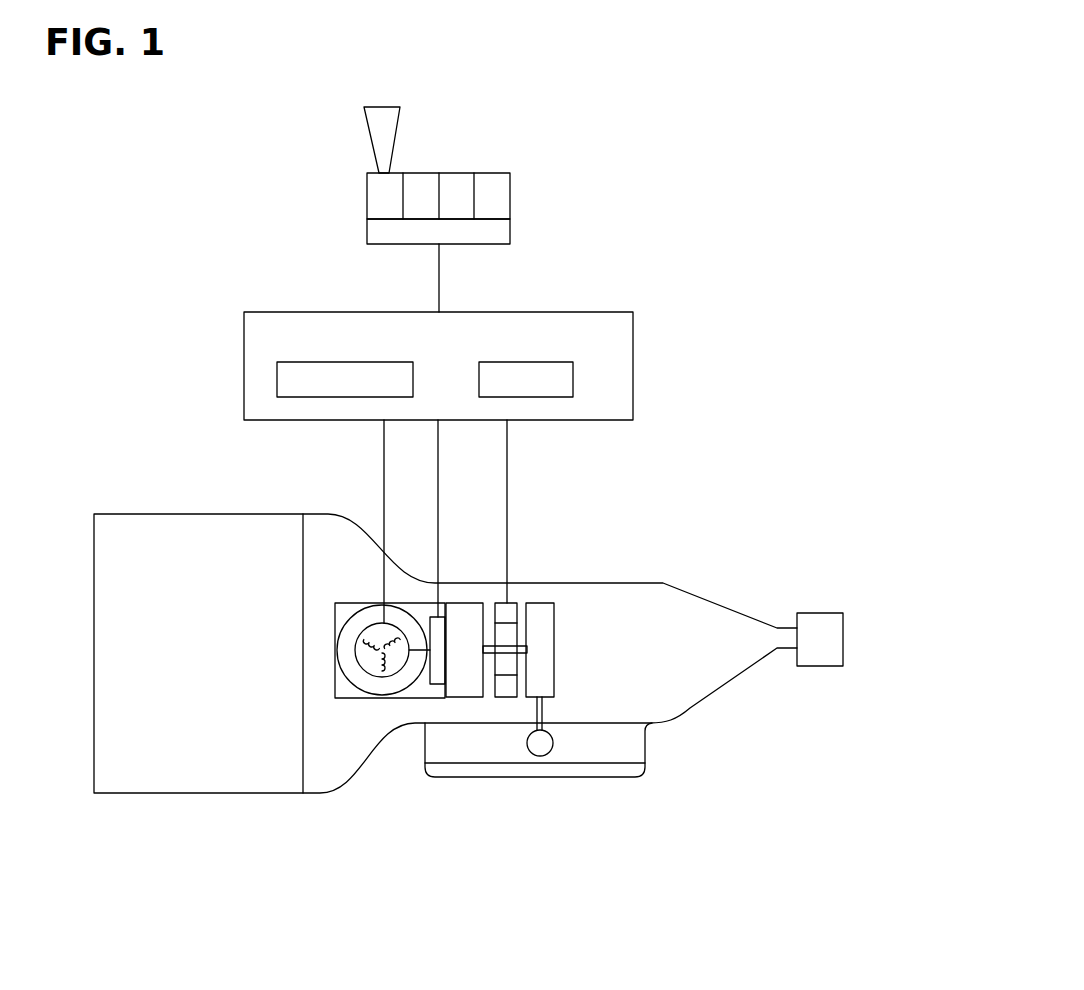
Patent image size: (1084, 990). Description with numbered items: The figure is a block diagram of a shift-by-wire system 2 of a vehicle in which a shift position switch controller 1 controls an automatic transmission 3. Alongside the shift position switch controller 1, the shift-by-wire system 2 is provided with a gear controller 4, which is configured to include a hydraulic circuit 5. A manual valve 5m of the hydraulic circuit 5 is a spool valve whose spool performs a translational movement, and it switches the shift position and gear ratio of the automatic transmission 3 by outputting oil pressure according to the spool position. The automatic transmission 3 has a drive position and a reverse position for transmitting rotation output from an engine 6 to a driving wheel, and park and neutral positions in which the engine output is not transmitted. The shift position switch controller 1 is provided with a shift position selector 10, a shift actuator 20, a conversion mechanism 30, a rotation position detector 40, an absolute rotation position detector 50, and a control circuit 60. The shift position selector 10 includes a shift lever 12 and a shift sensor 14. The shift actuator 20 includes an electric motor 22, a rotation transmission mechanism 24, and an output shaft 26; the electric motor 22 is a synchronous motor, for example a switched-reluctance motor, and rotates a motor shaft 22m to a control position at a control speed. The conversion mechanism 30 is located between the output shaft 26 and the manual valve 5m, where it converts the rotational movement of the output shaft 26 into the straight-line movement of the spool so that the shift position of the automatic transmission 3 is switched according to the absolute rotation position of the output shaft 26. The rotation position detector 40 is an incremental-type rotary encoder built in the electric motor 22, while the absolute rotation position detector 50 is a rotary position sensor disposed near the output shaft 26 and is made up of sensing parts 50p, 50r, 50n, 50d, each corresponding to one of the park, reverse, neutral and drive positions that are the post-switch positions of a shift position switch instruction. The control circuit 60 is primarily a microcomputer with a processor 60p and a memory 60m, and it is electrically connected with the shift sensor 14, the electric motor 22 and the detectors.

The shift position switch controller 1 is at (333, 707).
The shift-by-wire system 2 is at (93, 807).
The automatic transmission 3 is at (718, 695).
The gear controller 4 is at (633, 767).
The hydraulic circuit 5 is at (595, 757).
The manual valve 5m is at (550, 750).
The engine 6 is at (193, 793).
The shift position selector 10 is at (488, 172).
The shift lever 12 is at (376, 146).
The shift sensor 14 is at (370, 232).
The shift actuator 20 is at (352, 600).
The electric motor 22 is at (364, 673).
The motor shaft 22m is at (428, 652).
The rotation transmission mechanism 24 is at (463, 697).
The output shaft 26 is at (522, 642).
The conversion mechanism 30 is at (557, 645).
The rotation position detector 40 is at (436, 684).
The absolute rotation position detector 50 is at (493, 600).
The sensing part 50p is at (514, 610).
The sensing part 50r is at (515, 633).
The sensing part 50n is at (513, 667).
The sensing part 50d is at (497, 697).
The control circuit 60 is at (638, 348).
The processor 60p is at (316, 362).
The memory 60m is at (556, 362).